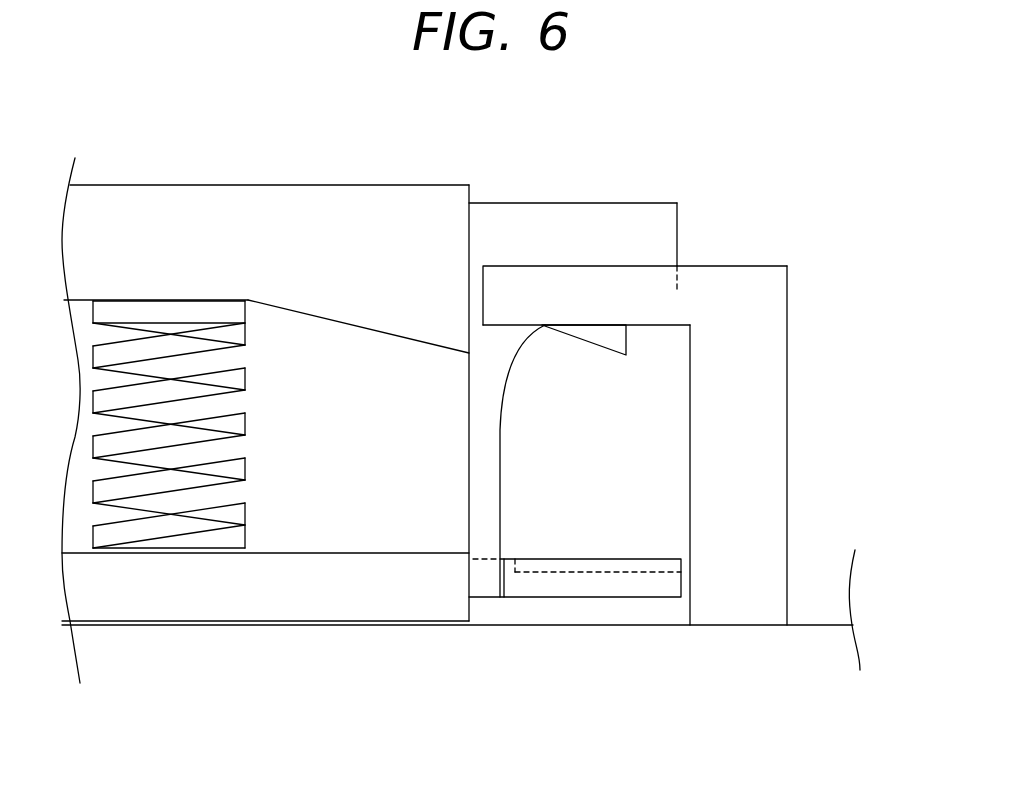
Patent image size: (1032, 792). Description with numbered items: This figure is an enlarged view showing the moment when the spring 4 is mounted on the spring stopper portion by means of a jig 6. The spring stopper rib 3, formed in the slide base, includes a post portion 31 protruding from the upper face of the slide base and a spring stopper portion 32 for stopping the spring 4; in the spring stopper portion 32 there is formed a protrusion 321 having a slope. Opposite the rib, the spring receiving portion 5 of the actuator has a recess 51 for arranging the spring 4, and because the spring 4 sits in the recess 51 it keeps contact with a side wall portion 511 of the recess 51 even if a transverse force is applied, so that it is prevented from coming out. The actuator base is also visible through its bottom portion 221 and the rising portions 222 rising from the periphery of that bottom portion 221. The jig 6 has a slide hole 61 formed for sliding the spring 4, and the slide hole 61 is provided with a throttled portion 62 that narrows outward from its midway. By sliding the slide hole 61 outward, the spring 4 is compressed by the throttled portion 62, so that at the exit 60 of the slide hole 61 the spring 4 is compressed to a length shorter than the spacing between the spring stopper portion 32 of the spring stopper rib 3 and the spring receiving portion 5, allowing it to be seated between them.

The spring stopper rib 3 is at (801, 350).
The post portion 31 is at (747, 447).
The spring stopper portion 32 is at (642, 307).
The protrusion 321 is at (583, 330).
The spring 4 is at (192, 310).
The spring receiving portion 5 is at (558, 583).
The recess 51 is at (612, 567).
The side wall portion 511 is at (508, 565).
The jig 6 is at (186, 172).
The exit 60 is at (465, 458).
The slide hole 61 is at (277, 463).
The throttled portion 62 is at (365, 327).
The bottom portion 221 is at (482, 578).
The rising portions 222 is at (497, 223).